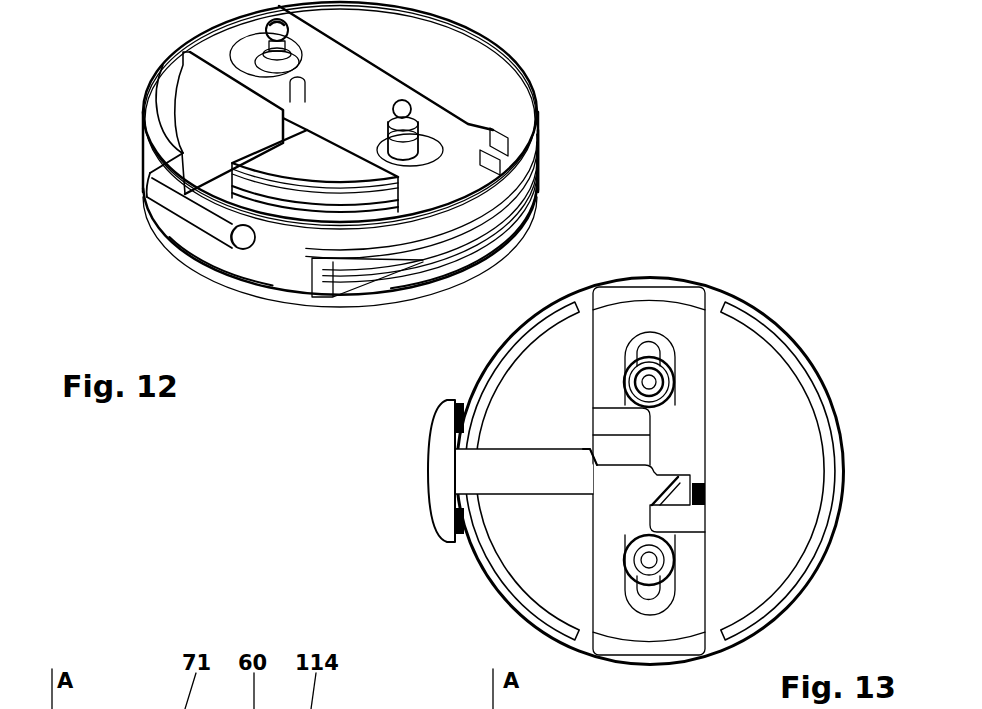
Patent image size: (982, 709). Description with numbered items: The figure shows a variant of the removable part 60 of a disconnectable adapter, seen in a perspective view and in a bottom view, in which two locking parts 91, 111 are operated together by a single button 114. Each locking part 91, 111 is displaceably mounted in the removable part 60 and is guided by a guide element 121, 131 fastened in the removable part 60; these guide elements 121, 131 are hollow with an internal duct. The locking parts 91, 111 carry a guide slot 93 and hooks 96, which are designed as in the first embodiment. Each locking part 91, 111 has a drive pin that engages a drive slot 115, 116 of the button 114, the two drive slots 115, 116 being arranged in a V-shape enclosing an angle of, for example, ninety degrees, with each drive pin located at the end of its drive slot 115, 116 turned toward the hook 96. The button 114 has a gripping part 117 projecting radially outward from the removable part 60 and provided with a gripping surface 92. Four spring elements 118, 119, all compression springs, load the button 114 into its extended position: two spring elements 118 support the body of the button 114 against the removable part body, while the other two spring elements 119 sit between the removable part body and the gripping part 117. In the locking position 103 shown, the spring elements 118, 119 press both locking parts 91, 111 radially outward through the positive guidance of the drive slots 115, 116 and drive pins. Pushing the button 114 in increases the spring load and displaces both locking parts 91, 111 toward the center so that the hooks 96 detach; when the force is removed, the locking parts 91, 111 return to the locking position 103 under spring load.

In FIG. 12, the removable part 60 is at (158, 261).
In FIG. 13, the removable part 60 is at (423, 553).
In FIG. 12, the locking part 91 is at (455, 132).
In FIG. 13, the locking part 91 is at (688, 581).
In FIG. 12, the gripping surface 92 is at (177, 217).
In FIG. 13, the guide slot 93 is at (663, 357).
In FIG. 12, the hook 96 is at (487, 157).
In FIG. 12, the locking position 103 is at (548, 169).
In FIG. 12, the locking part 111 is at (220, 43).
In FIG. 13, the locking part 111 is at (617, 338).
In FIG. 12, the button 114 is at (223, 183).
In FIG. 13, the button 114 is at (485, 467).
In FIG. 13, the drive slot 115 is at (610, 457).
In FIG. 13, the drive slot 116 is at (678, 478).
In FIG. 12, the gripping part 117 is at (188, 201).
In FIG. 13, the gripping part 117 is at (440, 467).
In FIG. 13, the spring element 118 is at (705, 493).
In FIG. 13, the spring element 119 is at (456, 525).
In FIG. 13, the guide element 121 is at (673, 548).
In FIG. 13, the guide element 131 is at (649, 378).